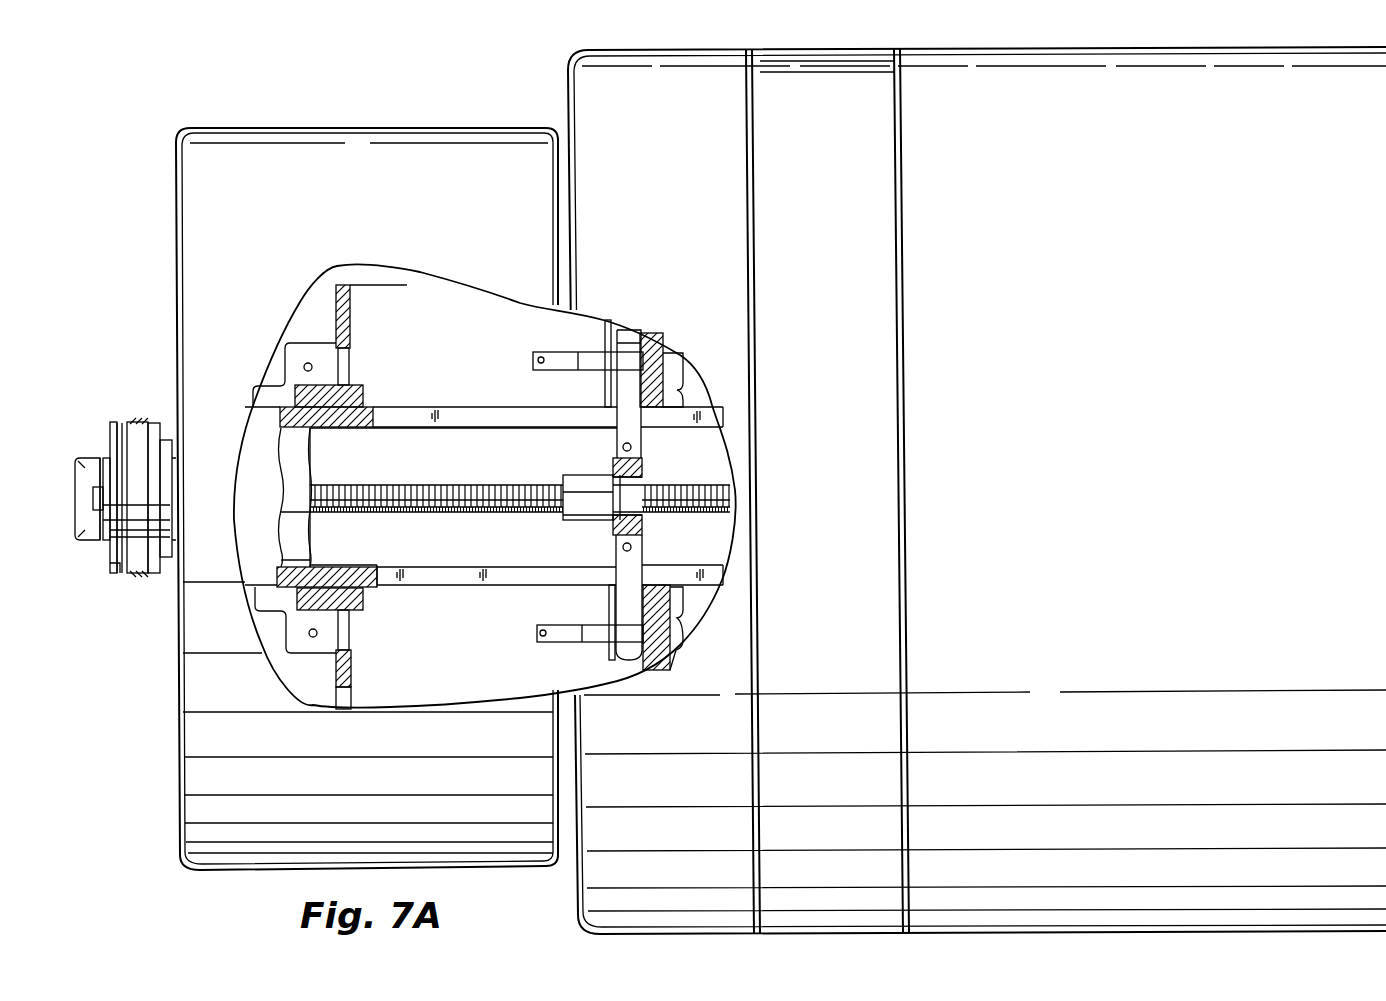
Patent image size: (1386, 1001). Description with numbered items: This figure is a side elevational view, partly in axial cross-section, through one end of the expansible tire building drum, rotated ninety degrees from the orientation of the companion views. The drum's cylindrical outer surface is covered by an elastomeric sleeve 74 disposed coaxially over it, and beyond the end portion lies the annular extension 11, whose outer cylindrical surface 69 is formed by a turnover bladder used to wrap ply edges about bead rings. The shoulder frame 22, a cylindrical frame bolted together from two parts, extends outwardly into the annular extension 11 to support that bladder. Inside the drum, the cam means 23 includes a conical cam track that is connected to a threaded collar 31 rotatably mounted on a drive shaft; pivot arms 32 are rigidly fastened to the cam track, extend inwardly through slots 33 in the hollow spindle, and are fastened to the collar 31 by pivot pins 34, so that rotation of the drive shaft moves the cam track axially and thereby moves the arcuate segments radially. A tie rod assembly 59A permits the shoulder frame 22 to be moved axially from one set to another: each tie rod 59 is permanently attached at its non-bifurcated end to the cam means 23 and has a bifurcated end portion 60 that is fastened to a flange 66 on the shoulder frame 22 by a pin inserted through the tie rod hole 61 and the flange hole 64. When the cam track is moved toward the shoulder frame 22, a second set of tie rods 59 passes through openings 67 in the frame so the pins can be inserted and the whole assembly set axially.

The annular extension 11 is at (488, 116).
The outer cylindrical surface 69 is at (448, 140).
The elastomeric sleeve 74 is at (1060, 44).
The shoulder frame 22 is at (335, 300).
The flange 66 is at (297, 348).
The flange hole 64 is at (303, 368).
The tie rod assembly 59A is at (368, 324).
The opening 67 is at (355, 368).
The tie rod hole 61 is at (545, 357).
The bifurcated end portion 60 is at (533, 361).
The tie rod 59 is at (600, 369).
The pivot arm 32 is at (625, 417).
The cam means 23 is at (674, 359).
The slot 33 is at (473, 429).
The pivot pin 34 is at (622, 447).
The threaded collar 31 is at (650, 478).